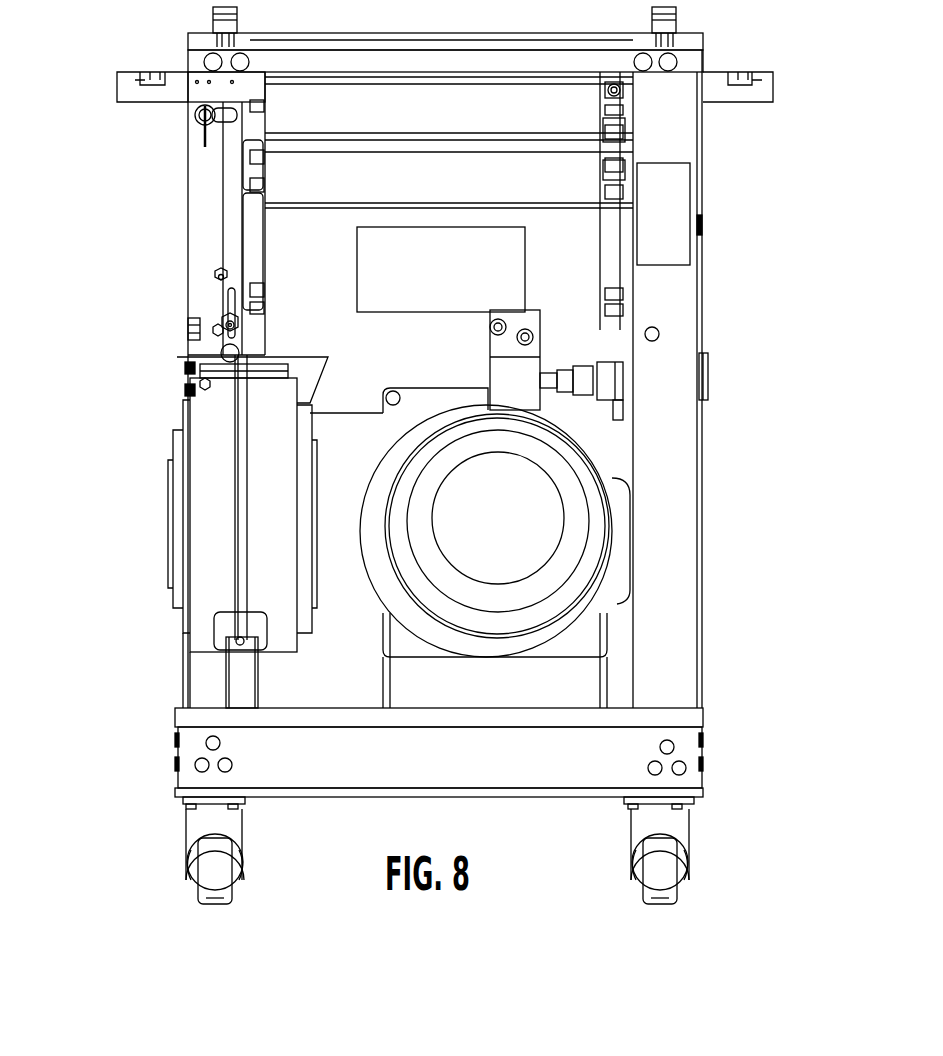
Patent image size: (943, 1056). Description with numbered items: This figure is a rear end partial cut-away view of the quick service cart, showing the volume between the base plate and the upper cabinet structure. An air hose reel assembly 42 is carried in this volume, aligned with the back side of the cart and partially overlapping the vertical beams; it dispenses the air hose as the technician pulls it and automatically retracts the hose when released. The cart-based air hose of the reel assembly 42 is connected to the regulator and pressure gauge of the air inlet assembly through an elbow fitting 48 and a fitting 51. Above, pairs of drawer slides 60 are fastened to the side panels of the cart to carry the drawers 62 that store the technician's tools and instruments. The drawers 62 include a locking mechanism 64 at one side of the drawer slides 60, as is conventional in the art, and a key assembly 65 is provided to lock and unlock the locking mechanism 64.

The air hose reel assembly 42 is at (205, 460).
The elbow fitting 48 is at (612, 381).
The fitting 51 is at (598, 378).
The drawer slides 60 is at (270, 205).
The drawers 62 is at (598, 115).
The locking mechanism 64 is at (222, 213).
The key assembly 65 is at (195, 118).